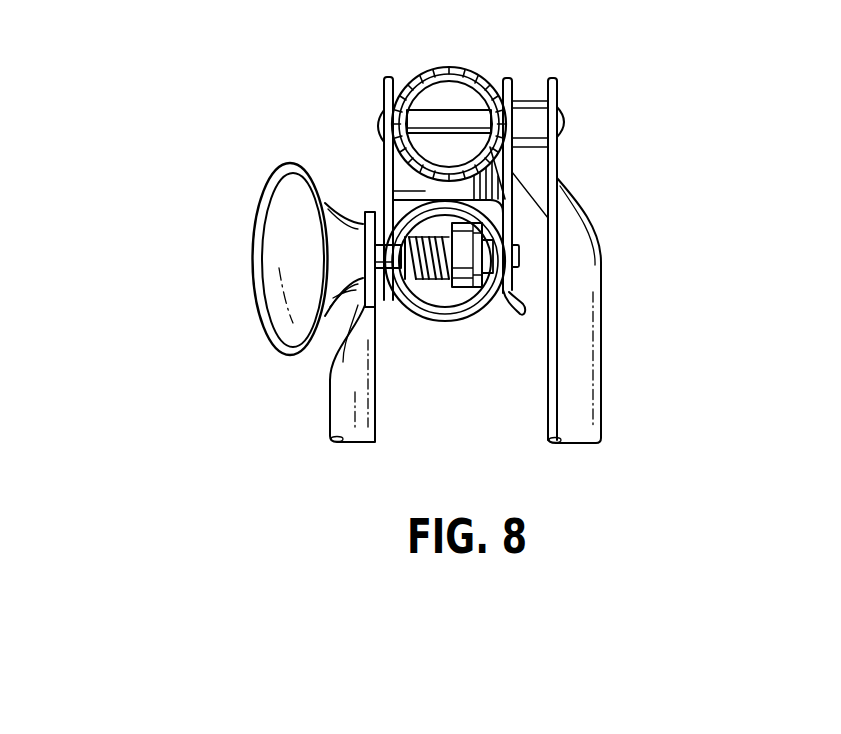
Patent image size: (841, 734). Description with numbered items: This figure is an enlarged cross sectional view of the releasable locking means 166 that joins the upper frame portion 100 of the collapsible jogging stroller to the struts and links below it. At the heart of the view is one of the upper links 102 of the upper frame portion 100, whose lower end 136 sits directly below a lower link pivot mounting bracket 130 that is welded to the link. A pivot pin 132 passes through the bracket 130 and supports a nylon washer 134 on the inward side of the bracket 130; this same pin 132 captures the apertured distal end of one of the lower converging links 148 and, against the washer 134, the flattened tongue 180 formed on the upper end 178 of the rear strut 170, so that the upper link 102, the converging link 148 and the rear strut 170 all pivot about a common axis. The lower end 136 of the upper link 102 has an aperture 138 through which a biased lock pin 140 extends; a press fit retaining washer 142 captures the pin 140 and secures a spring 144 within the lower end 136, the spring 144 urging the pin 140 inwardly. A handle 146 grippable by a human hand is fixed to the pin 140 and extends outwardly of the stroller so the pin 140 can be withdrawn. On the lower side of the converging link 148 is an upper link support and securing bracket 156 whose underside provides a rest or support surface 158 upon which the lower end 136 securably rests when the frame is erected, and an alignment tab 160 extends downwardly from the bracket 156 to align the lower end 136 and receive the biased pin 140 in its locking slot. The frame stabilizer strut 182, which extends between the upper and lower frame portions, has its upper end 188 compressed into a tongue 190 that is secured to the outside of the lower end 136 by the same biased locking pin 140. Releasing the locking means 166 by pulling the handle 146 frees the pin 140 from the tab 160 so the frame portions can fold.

The upper frame portion 100 is at (459, 97).
The lower converging links 148 is at (433, 70).
The upper links 102 is at (458, 307).
The lower end of upper link 136 is at (453, 313).
The lower link pivot mounting bracket 130 is at (383, 96).
The pivot pin 132 is at (374, 120).
The nylon washer 134 is at (533, 105).
The aperture 138 is at (513, 233).
The biased lock pin 140 is at (519, 257).
The press fit retaining washer 142 is at (513, 296).
The spring 144 is at (432, 306).
The handle 146 is at (267, 263).
The upper link support and securing bracket 156 is at (393, 196).
The rest or support surface 158 is at (500, 214).
The alignment tab 160 is at (517, 314).
The releasable locking means 166 is at (185, 165).
The rear strut 170 is at (593, 430).
The upper end of rear strut 178 is at (622, 228).
The tongue 180 is at (562, 97).
The frame stabilizer strut 182 is at (338, 410).
The upper end of stabilizer strut 188 is at (423, 335).
The tongue 190 is at (373, 305).